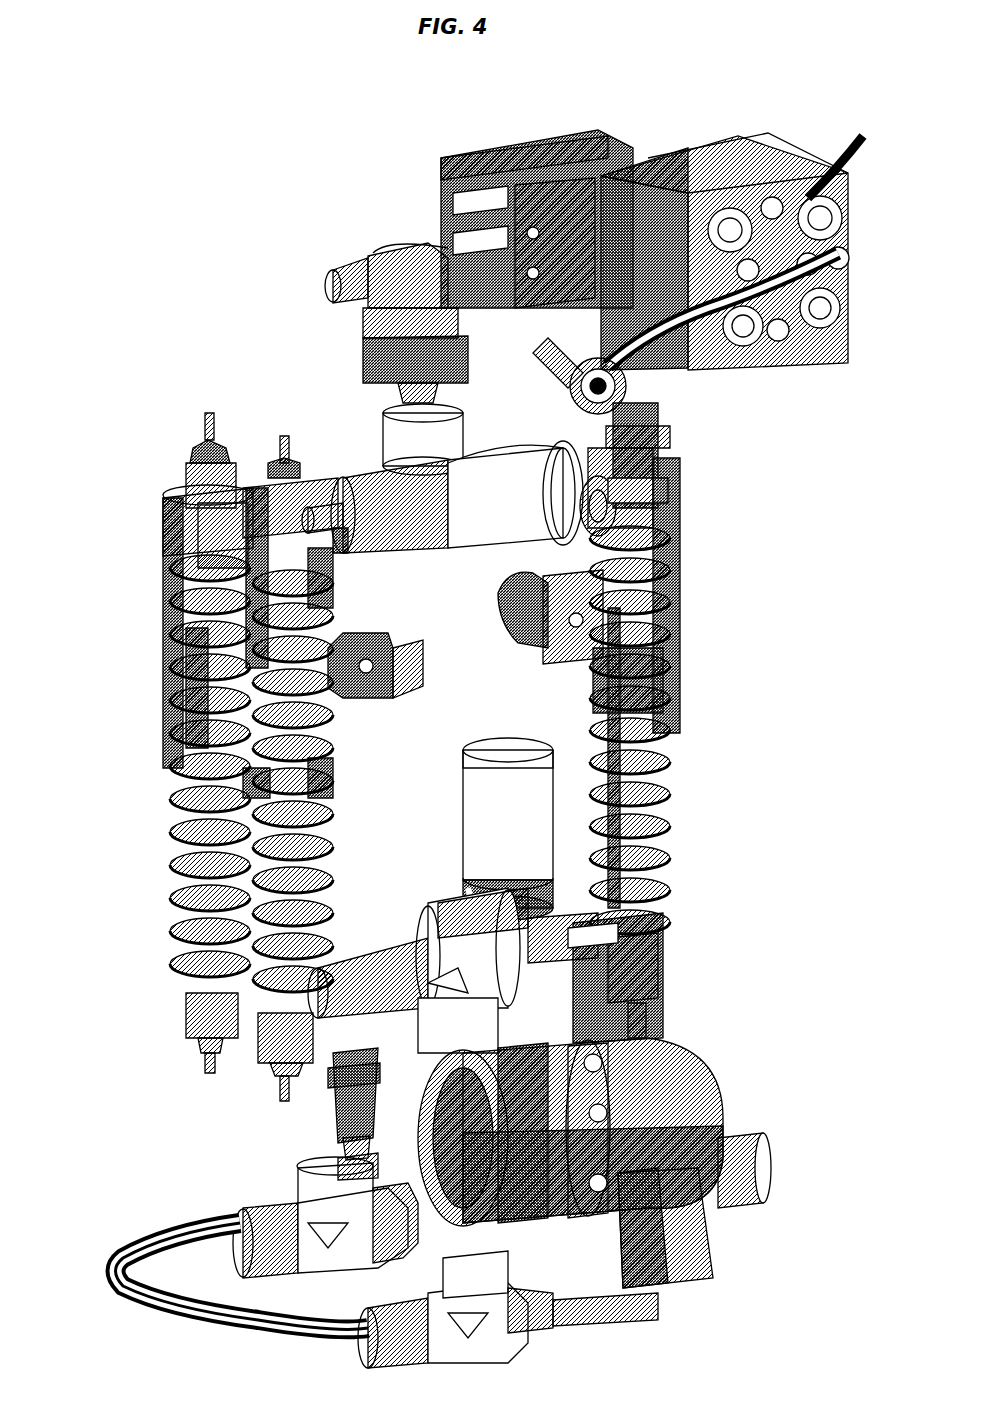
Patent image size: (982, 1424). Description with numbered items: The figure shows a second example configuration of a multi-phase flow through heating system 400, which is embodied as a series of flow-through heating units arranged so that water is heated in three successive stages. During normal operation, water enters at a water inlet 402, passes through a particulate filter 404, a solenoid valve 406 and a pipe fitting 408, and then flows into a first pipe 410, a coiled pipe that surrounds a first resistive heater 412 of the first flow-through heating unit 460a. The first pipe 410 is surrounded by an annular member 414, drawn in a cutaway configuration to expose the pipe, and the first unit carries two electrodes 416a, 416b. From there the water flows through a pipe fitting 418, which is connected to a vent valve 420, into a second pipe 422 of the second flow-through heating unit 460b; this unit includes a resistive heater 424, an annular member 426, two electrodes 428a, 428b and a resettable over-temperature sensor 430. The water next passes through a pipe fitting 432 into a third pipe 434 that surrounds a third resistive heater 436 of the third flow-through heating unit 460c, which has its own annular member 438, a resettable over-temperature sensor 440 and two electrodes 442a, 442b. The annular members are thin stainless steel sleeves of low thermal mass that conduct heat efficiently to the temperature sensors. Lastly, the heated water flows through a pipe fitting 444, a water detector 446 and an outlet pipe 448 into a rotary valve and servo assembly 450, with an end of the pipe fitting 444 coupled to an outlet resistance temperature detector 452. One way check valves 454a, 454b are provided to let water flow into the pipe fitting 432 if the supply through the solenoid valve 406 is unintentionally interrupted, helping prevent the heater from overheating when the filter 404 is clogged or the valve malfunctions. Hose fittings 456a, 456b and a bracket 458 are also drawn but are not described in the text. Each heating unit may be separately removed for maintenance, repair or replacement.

The multi-phase flow through heating system 400 is at (145, 185).
The water inlet 402 is at (739, 1155).
The particulate filter 404 is at (696, 1067).
The solenoid valve 406 is at (457, 740).
The pipe fitting 408 is at (426, 884).
The first pipe 410 is at (170, 852).
The first resistive heater 412 is at (173, 467).
The annular member 414 is at (159, 548).
The electrode 416a is at (198, 415).
The electrode 416b is at (194, 1035).
The pipe fitting 418 is at (376, 449).
The vent valve 420 is at (367, 300).
The second pipe 422 is at (659, 880).
The resistive heater 424 is at (646, 960).
The annular member 426 is at (656, 713).
The electrode 428a is at (625, 375).
The electrode 428b is at (635, 1015).
The resettable over-temperature sensor 430 is at (529, 643).
The pipe fitting 432 is at (458, 1025).
The third pipe 434 is at (313, 840).
The third resistive heater 436 is at (250, 1053).
The annular member 438 is at (317, 780).
The resettable over-temperature sensor 440 is at (396, 645).
The electrode 442a is at (274, 431).
The electrode 442b is at (268, 1093).
The pipe fitting 444 is at (410, 553).
The water detector 446 is at (655, 438).
The outlet pipe 448 is at (572, 344).
The rotary valve and servo assembly 450 is at (745, 143).
The outlet resistance temperature detector 452 is at (652, 497).
The one way check valve 454a is at (315, 1100).
The one way check valve 454b is at (409, 1215).
The first hose fitting 456a is at (233, 1212).
The second hose fitting 456b is at (519, 1330).
The bracket 458 is at (651, 1290).
The first flow-through heating unit 460a is at (112, 395).
The second flow-through heating unit 460b is at (715, 635).
The flow-through heating unit 460c is at (290, 425).